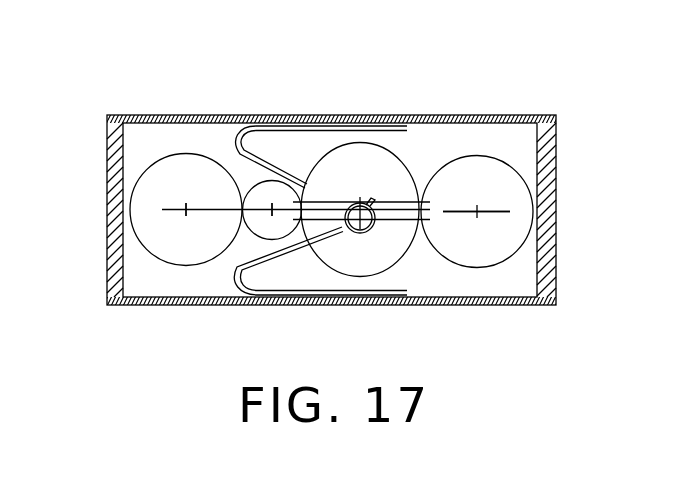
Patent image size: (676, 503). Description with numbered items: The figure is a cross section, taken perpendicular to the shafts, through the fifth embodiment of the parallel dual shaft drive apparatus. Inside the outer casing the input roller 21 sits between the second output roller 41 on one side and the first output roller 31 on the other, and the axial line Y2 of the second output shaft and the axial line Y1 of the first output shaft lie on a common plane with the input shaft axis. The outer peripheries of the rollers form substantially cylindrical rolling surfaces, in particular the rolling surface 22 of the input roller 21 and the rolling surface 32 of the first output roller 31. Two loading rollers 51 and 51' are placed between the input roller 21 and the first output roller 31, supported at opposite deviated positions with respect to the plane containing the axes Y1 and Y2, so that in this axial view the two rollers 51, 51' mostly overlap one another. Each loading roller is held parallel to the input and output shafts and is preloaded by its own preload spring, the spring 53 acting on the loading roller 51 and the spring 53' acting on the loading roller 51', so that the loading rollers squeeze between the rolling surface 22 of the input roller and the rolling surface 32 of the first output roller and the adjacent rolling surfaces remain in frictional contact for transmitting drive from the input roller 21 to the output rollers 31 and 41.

The second output roller 41 is at (172, 173).
The input roller 21 is at (258, 198).
The rolling surface 22 is at (252, 230).
The preload spring 53' is at (321, 109).
The preload spring 53 is at (320, 302).
The loading roller 51' is at (360, 154).
The loading roller 51 is at (356, 287).
The first output roller 31 is at (475, 172).
The rolling surface 32 is at (463, 270).
The axial line of first output shaft Y1 is at (477, 212).
The axial line of second output shaft Y2 is at (185, 215).